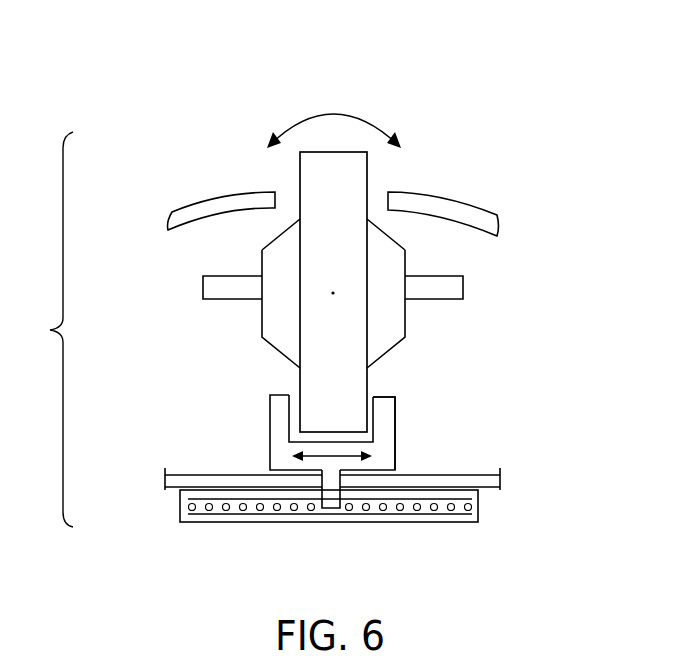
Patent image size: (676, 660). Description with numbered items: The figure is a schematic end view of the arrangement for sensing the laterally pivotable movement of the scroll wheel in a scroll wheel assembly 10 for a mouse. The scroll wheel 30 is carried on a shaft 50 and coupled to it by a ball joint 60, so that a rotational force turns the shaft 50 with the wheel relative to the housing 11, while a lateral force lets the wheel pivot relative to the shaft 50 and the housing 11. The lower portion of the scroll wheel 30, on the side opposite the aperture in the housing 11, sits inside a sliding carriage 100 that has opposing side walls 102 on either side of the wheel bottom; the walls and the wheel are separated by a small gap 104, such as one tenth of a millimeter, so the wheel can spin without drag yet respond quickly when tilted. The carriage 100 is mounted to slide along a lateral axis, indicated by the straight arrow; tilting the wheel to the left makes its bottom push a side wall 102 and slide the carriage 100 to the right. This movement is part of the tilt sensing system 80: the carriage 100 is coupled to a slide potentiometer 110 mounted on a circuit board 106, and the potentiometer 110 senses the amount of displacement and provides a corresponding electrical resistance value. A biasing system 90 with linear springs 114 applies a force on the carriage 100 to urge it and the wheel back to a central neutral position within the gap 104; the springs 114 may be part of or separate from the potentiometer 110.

The scroll wheel assembly 10 is at (236, 77).
The mouse housing 11 is at (443, 195).
The scroll wheel 30 is at (301, 181).
The shaft 50 is at (250, 279).
The ball joint 60 is at (394, 274).
The tilt sensing system 80 is at (237, 455).
The biasing system 90 is at (176, 529).
The sliding carriage 100 is at (270, 430).
The side wall 102 is at (398, 406).
The gap 104 is at (294, 393).
The circuit board 106 is at (470, 478).
The slide potentiometer 110 is at (420, 522).
The linear spring 114 is at (265, 521).